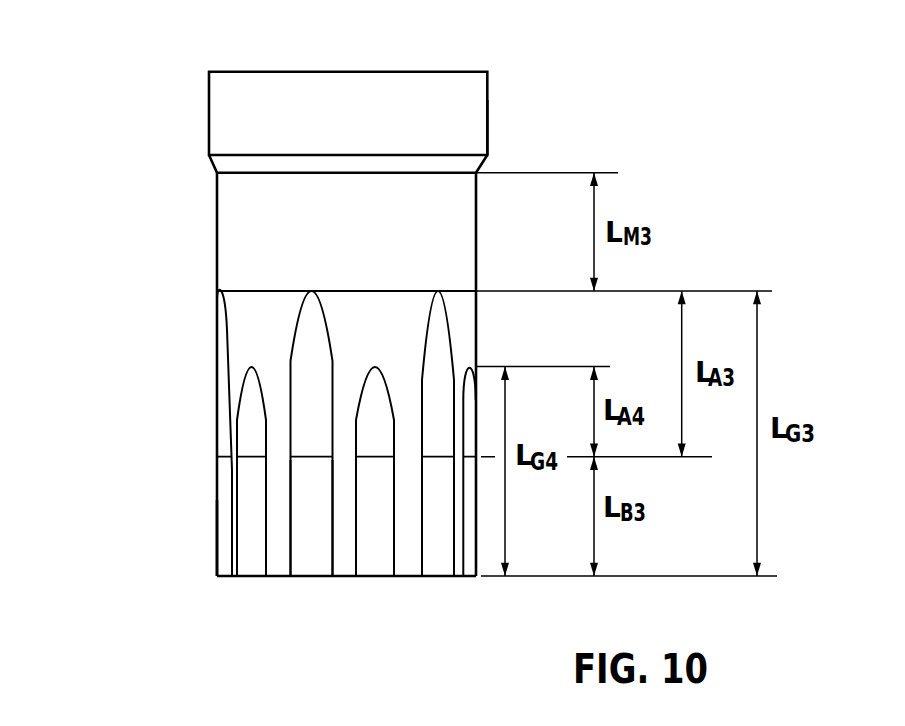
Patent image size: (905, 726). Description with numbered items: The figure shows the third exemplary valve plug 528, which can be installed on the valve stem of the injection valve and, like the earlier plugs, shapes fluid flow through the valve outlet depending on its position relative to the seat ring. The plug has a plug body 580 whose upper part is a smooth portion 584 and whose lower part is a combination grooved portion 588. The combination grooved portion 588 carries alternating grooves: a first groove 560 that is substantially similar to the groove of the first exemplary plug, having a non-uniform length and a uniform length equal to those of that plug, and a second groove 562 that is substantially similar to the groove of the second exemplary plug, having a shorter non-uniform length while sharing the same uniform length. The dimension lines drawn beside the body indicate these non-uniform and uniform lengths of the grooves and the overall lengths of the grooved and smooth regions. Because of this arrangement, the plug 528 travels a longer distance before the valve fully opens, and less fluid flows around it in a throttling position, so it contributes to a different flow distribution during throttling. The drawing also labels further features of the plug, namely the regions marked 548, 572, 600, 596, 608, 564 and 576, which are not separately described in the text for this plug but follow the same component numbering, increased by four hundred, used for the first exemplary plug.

The valve plug 528 is at (80, 165).
The shoulder 548 is at (216, 167).
The cap portion 572 is at (428, 80).
The cap side wall 600 is at (473, 122).
The plug body 580 is at (228, 235).
The smooth portion 584 is at (478, 232).
The arcuate slot 596 is at (310, 290).
The combination grooved portion 588 is at (230, 392).
The reference line 608 is at (224, 457).
The lower wall portion 564 is at (220, 532).
The first groove 560 is at (310, 563).
The second groove 562 is at (373, 563).
The bottom edge 576 is at (440, 577).